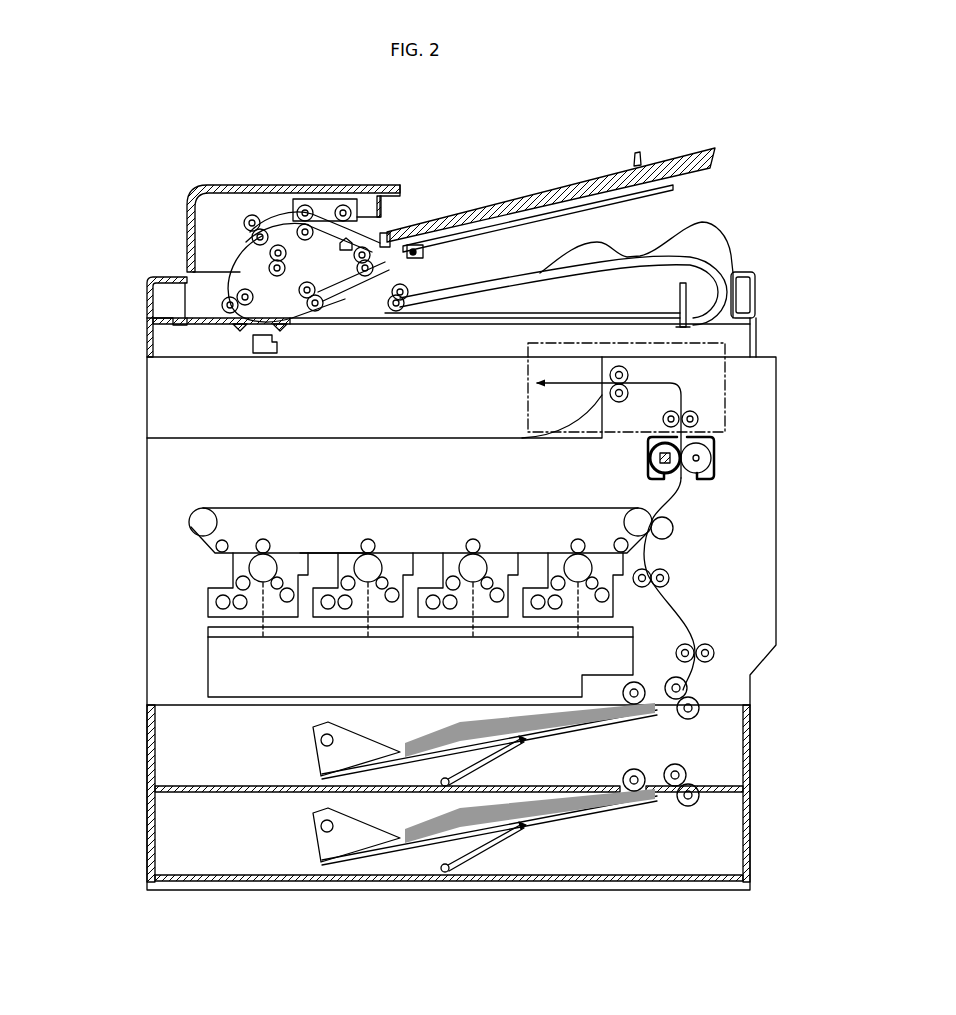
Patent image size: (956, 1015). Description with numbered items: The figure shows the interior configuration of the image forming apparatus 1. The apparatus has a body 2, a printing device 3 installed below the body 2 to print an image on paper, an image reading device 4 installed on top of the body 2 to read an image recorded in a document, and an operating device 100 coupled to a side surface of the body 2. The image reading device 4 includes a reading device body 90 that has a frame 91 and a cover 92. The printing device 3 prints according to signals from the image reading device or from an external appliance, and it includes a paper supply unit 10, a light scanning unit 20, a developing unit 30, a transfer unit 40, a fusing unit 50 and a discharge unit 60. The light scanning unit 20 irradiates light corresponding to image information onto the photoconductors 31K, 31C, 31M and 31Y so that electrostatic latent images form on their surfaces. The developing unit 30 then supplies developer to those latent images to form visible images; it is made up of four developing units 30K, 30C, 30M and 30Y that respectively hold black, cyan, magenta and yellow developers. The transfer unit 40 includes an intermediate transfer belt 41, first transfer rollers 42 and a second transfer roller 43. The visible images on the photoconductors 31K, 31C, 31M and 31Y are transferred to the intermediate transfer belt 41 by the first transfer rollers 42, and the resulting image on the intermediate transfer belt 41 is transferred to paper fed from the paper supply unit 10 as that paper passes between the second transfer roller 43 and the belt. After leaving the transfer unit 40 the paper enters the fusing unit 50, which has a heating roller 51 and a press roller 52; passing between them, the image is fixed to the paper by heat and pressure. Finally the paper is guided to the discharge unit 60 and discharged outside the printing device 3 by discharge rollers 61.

The image forming apparatus 1 is at (481, 133).
The body 2 is at (785, 366).
The printing device 3 is at (122, 521).
The image reading device 4 is at (174, 198).
The paper supply unit 10 is at (201, 802).
The light scanning unit 20 is at (200, 659).
The developing unit 30 is at (640, 602).
The yellow developing unit 30Y is at (212, 584).
The magenta developing unit 30M is at (320, 630).
The cyan developing unit 30C is at (439, 630).
The black developing unit 30K is at (546, 630).
The photoconductor 31Y is at (270, 556).
The photoconductor 31M is at (378, 556).
The photoconductor 31C is at (482, 556).
The photoconductor 31K is at (586, 556).
The transfer unit 40 is at (438, 498).
The intermediate transfer belt 41 is at (333, 552).
The first transfer rollers 42 is at (258, 538).
The second transfer roller 43 is at (675, 529).
The fusing unit 50 is at (728, 432).
The heating roller 51 is at (649, 459).
The press roller 52 is at (711, 470).
The discharge unit 60 is at (646, 376).
The discharge rollers 61 is at (626, 400).
The reading device body 90 is at (62, 289).
The frame 91 is at (132, 343).
The cover 92 is at (132, 290).
The operating device 100 is at (745, 333).